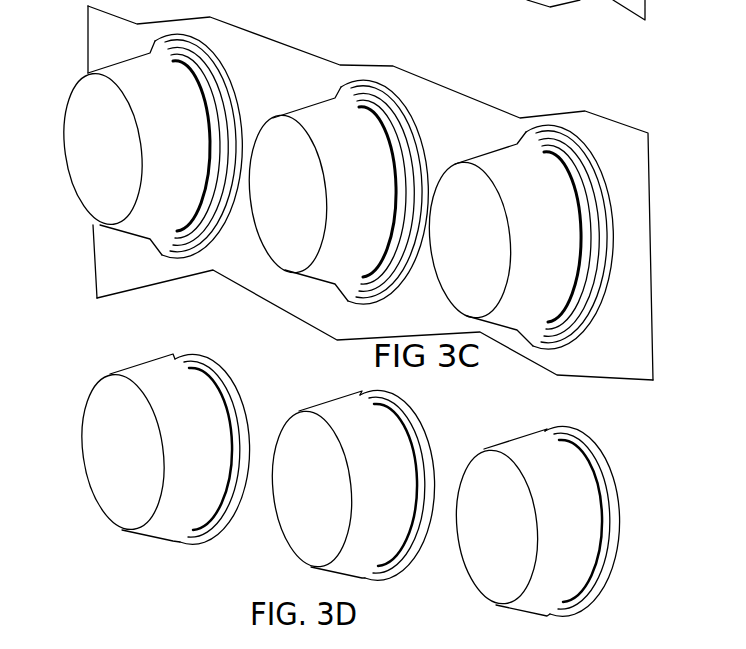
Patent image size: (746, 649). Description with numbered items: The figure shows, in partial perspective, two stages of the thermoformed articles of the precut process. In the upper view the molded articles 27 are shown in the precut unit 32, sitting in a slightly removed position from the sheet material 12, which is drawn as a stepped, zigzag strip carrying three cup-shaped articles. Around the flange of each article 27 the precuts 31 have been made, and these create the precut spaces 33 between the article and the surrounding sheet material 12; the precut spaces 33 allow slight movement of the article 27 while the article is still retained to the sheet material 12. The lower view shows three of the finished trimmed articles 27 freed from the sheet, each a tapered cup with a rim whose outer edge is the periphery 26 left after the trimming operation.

In FIG. 3C, the sheet material 12 is at (471, 139).
In FIG. 3C, the periphery 26 is at (585, 298).
In FIG. 3D, the periphery 26 is at (618, 527).
In FIG. 3C, the molded article 27 is at (555, 253).
In FIG. 3D, the molded article 27 is at (590, 493).
In FIG. 3C, the precut 31 is at (590, 327).
In FIG. 3C, the precut unit 32 is at (50, 70).
In FIG. 3C, the precut space 33 is at (603, 173).